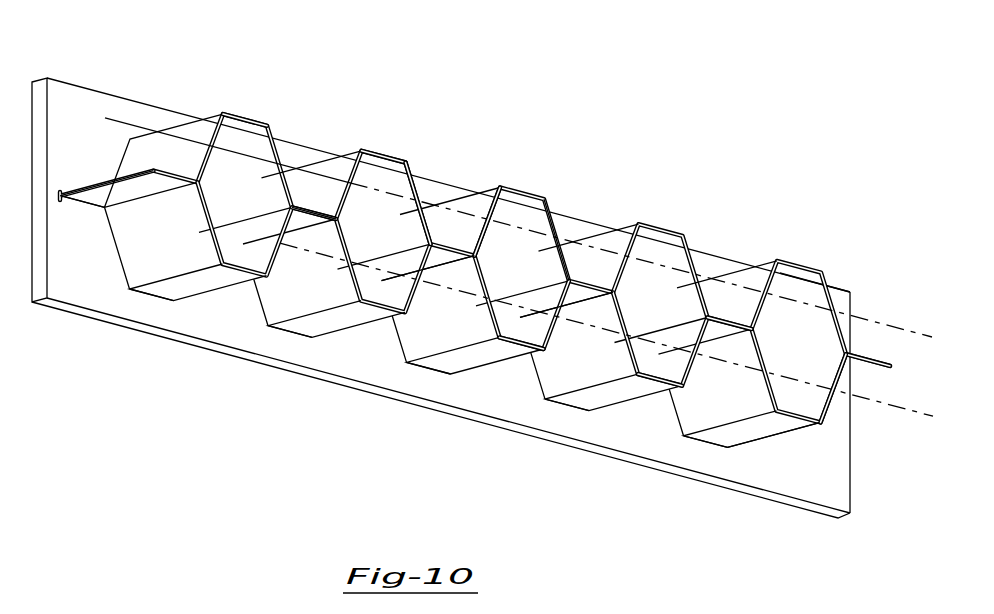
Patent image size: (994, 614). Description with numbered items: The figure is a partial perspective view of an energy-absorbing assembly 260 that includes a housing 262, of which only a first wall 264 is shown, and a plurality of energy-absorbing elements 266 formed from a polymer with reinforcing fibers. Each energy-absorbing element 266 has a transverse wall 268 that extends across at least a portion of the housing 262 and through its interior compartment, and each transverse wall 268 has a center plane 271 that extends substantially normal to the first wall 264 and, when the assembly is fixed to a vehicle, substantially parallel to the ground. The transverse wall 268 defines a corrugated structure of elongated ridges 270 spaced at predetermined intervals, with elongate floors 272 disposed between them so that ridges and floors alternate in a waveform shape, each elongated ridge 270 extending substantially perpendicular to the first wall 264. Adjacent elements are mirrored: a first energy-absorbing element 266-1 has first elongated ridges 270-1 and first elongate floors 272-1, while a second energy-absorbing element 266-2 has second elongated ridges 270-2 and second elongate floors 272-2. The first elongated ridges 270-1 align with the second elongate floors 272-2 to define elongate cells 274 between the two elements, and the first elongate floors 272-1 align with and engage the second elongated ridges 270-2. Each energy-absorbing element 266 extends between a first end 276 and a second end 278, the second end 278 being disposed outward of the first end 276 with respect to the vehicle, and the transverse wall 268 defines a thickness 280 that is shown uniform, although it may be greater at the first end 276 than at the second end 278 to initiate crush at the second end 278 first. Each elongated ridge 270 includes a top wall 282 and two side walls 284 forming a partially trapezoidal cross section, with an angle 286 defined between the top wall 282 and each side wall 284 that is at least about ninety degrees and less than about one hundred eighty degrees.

The energy-absorbing assembly 260 is at (488, 300).
The housing 262 is at (851, 292).
The first wall 264 is at (830, 498).
The energy-absorbing element 266 is at (820, 378).
The first energy-absorbing element 266-1 is at (150, 150).
The second energy-absorbing element 266-2 is at (122, 263).
The transverse wall 268 is at (840, 285).
The elongated ridge 270 is at (550, 208).
The first elongated ridge 270-1 is at (237, 100).
The second elongated ridge 270-2 is at (178, 305).
The center plane 271 is at (932, 333).
The elongate floor 272 is at (720, 330).
The first elongate floor 272-1 is at (64, 191).
The second elongate floor 272-2 is at (66, 204).
The elongate cell 274 is at (500, 245).
The first end 276 is at (745, 462).
The second end 278 is at (838, 420).
The thickness 280 is at (657, 352).
The top wall 282 is at (485, 385).
The side wall 284 is at (487, 313).
The angle 286 is at (533, 333).